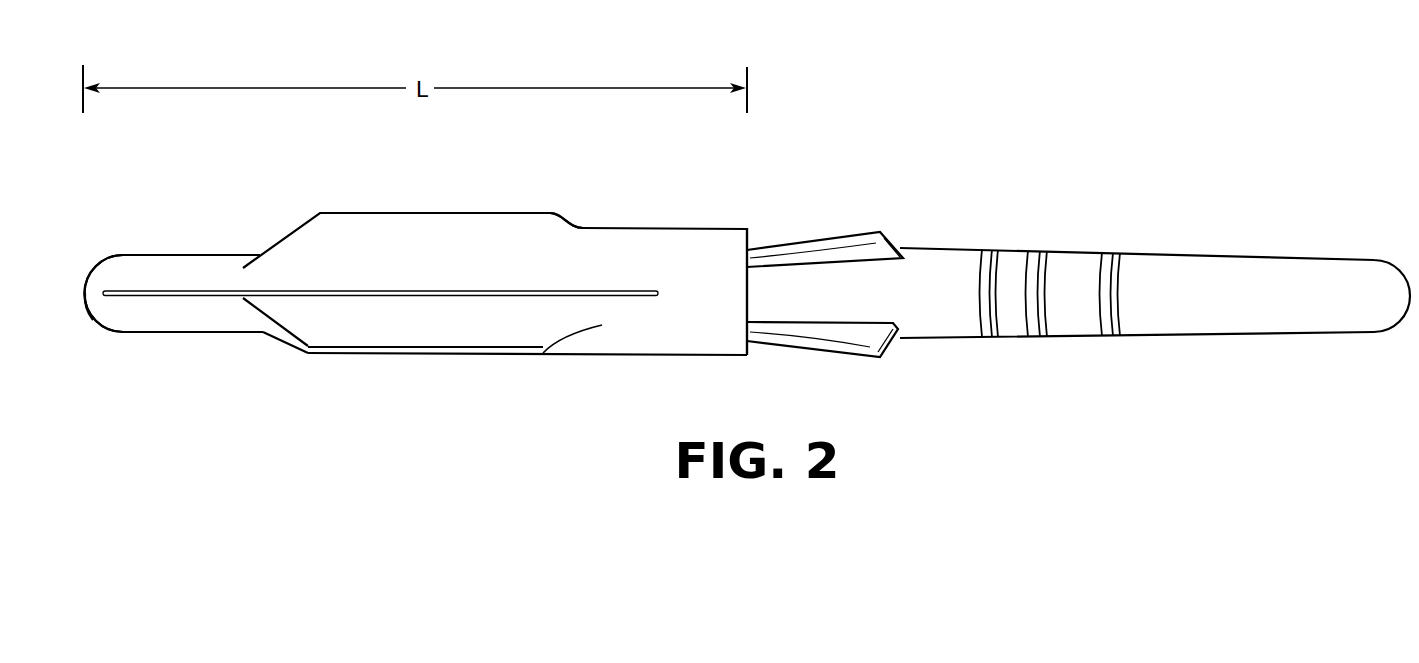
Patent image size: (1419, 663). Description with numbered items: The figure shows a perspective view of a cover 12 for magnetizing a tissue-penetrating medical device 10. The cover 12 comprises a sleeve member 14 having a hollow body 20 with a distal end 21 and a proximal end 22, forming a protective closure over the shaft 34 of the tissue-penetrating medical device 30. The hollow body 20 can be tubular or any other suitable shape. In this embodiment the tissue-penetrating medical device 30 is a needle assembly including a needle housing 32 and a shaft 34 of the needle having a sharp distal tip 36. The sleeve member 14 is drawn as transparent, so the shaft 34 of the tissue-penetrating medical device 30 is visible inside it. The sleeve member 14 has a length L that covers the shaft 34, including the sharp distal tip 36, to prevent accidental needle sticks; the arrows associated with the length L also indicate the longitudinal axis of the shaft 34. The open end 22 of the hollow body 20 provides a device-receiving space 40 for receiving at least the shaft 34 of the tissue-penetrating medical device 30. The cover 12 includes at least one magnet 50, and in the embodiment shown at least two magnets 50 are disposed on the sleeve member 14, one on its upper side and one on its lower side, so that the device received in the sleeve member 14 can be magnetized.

The tissue-penetrating medical device 10 is at (905, 151).
The cover 12 is at (691, 187).
The sleeve member 14 is at (80, 246).
The hollow body 20 is at (182, 334).
The distal end 21 is at (96, 327).
The proximal end 22 is at (742, 347).
The tissue-penetrating medical device 30 is at (1051, 200).
The needle housing 32 is at (798, 251).
The shaft 34 is at (591, 290).
The sharp distal tip 36 is at (106, 289).
The device-receiving space 40 is at (315, 327).
The magnet 50 is at (461, 205).